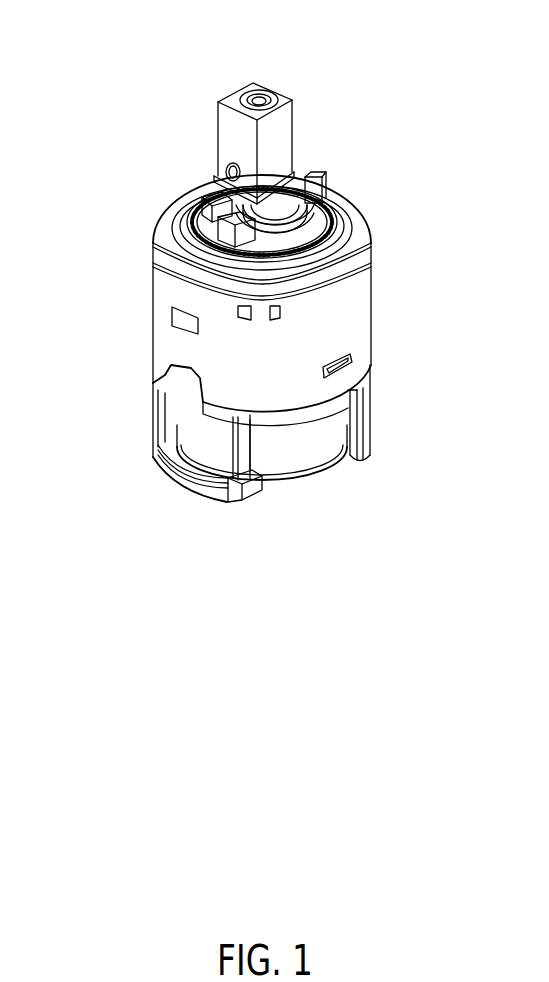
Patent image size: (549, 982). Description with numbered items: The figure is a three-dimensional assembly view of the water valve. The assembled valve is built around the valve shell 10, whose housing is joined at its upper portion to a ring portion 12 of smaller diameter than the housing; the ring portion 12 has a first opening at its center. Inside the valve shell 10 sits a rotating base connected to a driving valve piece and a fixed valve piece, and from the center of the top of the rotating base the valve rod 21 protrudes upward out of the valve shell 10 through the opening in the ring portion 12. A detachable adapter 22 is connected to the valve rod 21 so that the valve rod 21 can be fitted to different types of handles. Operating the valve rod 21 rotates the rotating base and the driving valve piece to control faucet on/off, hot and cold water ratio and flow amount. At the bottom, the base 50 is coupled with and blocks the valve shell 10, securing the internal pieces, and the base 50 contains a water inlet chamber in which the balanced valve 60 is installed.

The valve shell 10 is at (373, 313).
The ring portion 12 is at (163, 238).
The valve rod 21 is at (262, 86).
The adapter 22 is at (283, 137).
The base 50 is at (148, 400).
The balanced valve 60 is at (337, 477).